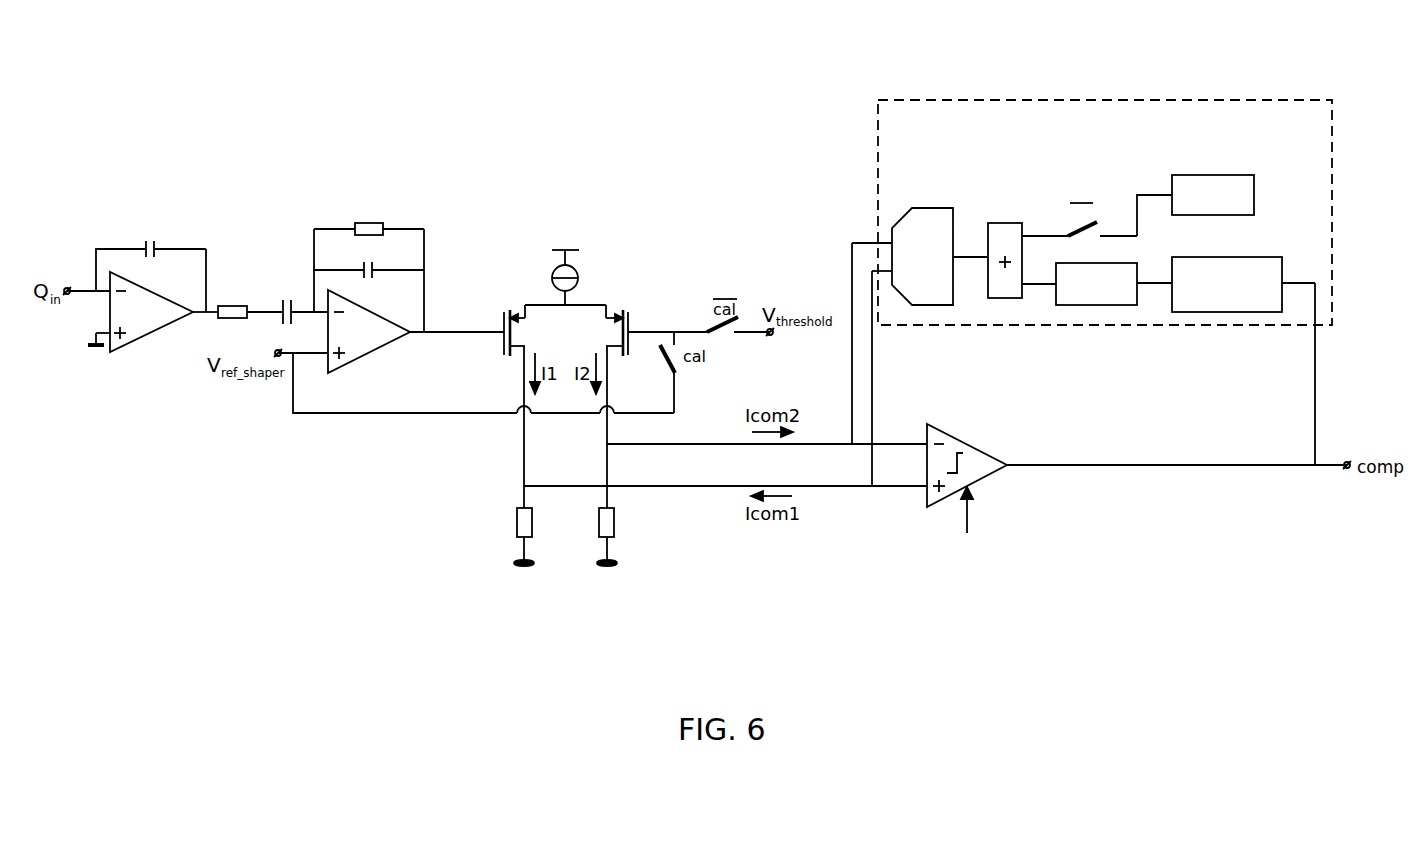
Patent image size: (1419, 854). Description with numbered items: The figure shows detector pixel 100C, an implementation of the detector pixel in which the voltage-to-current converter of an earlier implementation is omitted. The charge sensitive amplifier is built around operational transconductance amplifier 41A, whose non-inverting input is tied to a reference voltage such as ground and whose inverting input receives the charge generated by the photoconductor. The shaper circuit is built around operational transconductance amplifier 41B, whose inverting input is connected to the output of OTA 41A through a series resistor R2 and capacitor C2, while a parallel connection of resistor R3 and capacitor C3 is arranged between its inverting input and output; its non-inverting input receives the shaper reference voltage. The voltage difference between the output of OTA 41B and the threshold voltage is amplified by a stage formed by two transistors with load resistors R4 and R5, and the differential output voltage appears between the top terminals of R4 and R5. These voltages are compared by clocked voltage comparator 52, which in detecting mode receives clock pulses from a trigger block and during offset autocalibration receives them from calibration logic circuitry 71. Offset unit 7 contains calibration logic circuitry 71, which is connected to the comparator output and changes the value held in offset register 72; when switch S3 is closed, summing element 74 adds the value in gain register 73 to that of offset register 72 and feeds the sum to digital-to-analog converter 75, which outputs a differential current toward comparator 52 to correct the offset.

The detector pixel 100C is at (713, 100).
The operational transconductance amplifier 41A is at (140, 325).
The operational transconductance amplifier 41B is at (365, 345).
The resistor R2 is at (232, 299).
The capacitor C2 is at (290, 302).
The resistor R3 is at (369, 220).
The capacitor C3 is at (369, 284).
The resistor R4 is at (512, 537).
The resistor R5 is at (619, 537).
The clocked voltage comparator 52 is at (925, 507).
The offset unit 7 is at (1335, 100).
The calibration logic circuitry 71 is at (1232, 312).
The offset register 72 is at (1105, 305).
The gain register 73 is at (1218, 175).
The summing element 74 is at (1002, 223).
The digital-to-analog converter 75 is at (945, 208).
The switch S3 is at (1095, 222).